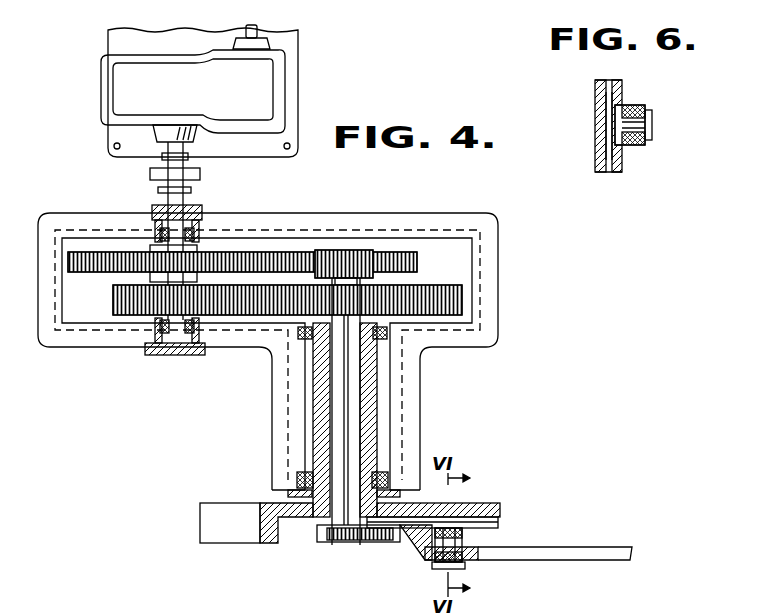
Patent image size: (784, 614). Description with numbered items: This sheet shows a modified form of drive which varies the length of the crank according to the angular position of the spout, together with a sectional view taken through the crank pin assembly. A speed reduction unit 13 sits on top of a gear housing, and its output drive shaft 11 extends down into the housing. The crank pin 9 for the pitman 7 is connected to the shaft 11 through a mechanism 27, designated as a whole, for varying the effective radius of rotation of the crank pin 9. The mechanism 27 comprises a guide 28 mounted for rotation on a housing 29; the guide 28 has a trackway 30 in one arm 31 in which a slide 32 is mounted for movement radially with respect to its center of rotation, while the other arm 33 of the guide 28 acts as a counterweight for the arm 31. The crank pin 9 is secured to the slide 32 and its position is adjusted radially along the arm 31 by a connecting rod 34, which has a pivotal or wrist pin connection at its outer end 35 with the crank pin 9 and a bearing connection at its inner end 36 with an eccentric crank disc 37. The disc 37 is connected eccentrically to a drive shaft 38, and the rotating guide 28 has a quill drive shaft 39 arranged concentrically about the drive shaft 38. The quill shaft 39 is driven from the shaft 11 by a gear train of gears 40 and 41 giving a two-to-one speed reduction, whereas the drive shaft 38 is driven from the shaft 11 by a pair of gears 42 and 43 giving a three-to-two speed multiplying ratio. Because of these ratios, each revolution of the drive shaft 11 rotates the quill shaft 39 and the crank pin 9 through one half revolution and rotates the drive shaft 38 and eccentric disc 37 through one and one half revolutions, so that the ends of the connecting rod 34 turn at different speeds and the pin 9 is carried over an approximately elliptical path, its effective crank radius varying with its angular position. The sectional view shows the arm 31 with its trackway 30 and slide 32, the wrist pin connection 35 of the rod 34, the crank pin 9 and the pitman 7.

In FIG. 4, the pitman 7 is at (590, 548).
In FIG. 6, the pitman 7 is at (640, 150).
In FIG. 4, the crank pin 9 is at (460, 568).
In FIG. 6, the crank pin 9 is at (652, 125).
In FIG. 4, the output drive shaft 11 is at (185, 200).
In FIG. 4, the speed reduction unit 13 is at (265, 83).
In FIG. 4, the mechanism 27 is at (498, 268).
In FIG. 4, the guide 28 is at (307, 517).
In FIG. 4, the housing 29 is at (410, 430).
In FIG. 4, the trackway 30 is at (418, 520).
In FIG. 6, the trackway 30 is at (608, 98).
In FIG. 4, the arm 31 is at (485, 505).
In FIG. 6, the arm 31 is at (598, 122).
In FIG. 4, the slide 32 is at (492, 527).
In FIG. 6, the slide 32 is at (610, 143).
In FIG. 4, the other arm 33 is at (218, 536).
In FIG. 4, the connecting rod 34 is at (410, 547).
In FIG. 4, the outer end 35 is at (468, 535).
In FIG. 6, the outer end 35 is at (630, 108).
In FIG. 4, the inner end 36 is at (316, 542).
In FIG. 4, the eccentric crank disc 37 is at (365, 540).
In FIG. 4, the drive shaft 38 is at (344, 412).
In FIG. 4, the quill drive shaft 39 is at (318, 418).
In FIG. 4, the gear 40 is at (118, 300).
In FIG. 4, the gear 41 is at (438, 288).
In FIG. 4, the gear 42 is at (72, 262).
In FIG. 4, the gear 43 is at (385, 248).